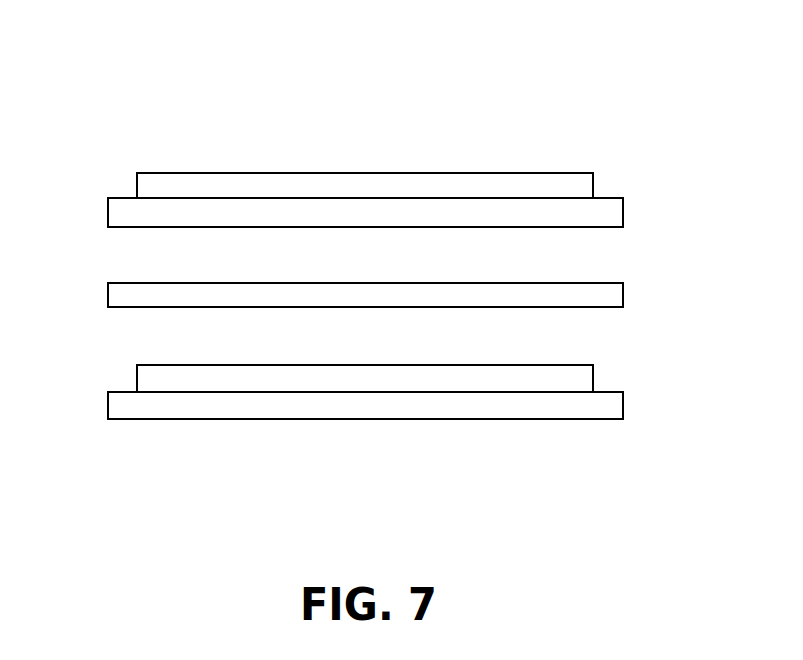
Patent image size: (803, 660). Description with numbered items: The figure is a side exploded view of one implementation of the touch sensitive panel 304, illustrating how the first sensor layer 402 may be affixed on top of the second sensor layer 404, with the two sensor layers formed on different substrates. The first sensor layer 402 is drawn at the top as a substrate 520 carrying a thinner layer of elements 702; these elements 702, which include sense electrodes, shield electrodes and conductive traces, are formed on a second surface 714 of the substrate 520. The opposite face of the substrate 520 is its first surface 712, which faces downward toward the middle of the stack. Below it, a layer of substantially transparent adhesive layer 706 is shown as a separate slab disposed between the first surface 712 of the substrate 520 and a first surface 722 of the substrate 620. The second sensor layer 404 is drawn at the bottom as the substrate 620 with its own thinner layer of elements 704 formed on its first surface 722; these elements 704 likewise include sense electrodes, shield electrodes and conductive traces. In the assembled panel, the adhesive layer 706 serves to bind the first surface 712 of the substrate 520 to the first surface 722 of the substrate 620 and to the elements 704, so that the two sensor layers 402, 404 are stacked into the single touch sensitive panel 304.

The touch sensitive panel 304 is at (669, 82).
The first sensor layer 402 is at (89, 145).
The second sensor layer 404 is at (89, 340).
The substrate 520 is at (623, 213).
The substrate 620 is at (623, 406).
The elements of first sensor layer 702 is at (593, 186).
The elements of second sensor layer 704 is at (593, 380).
The adhesive layer 706 is at (623, 292).
The first surface of substrate 520 712 is at (130, 228).
The second surface of substrate 520 714 is at (132, 198).
The first surface of substrate 620 722 is at (132, 392).